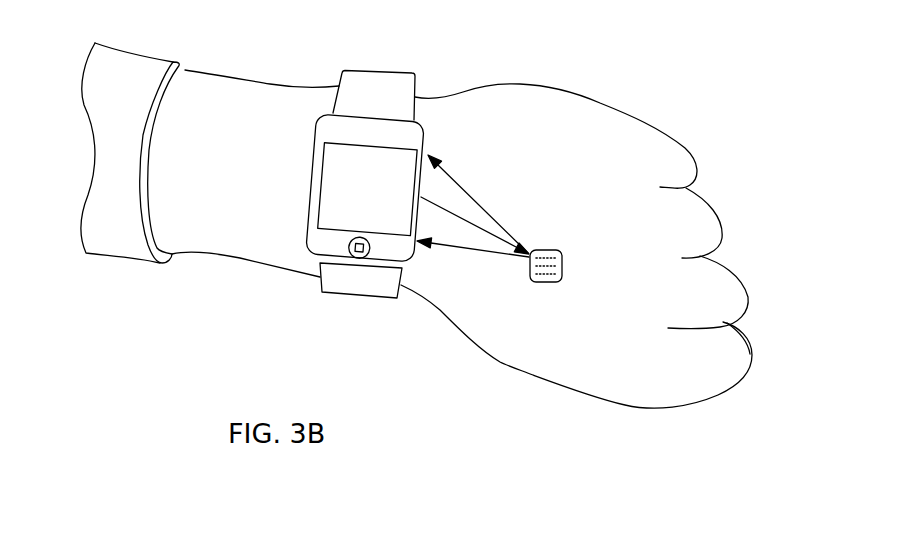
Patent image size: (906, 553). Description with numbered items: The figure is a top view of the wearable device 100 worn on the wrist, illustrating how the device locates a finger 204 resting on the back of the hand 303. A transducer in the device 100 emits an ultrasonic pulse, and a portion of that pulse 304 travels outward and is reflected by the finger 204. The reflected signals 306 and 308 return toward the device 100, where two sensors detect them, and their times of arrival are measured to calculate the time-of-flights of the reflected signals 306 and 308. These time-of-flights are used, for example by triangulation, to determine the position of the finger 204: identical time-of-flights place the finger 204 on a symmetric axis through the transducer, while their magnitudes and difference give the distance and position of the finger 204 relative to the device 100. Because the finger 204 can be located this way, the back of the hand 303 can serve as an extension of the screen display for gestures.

The wearable device 100 is at (338, 80).
The finger 204 is at (542, 283).
The hand 303 is at (615, 127).
The portion of the ultrasonic pulse 304 is at (475, 222).
The reflected signal 306 is at (439, 243).
The reflected signal 308 is at (472, 195).